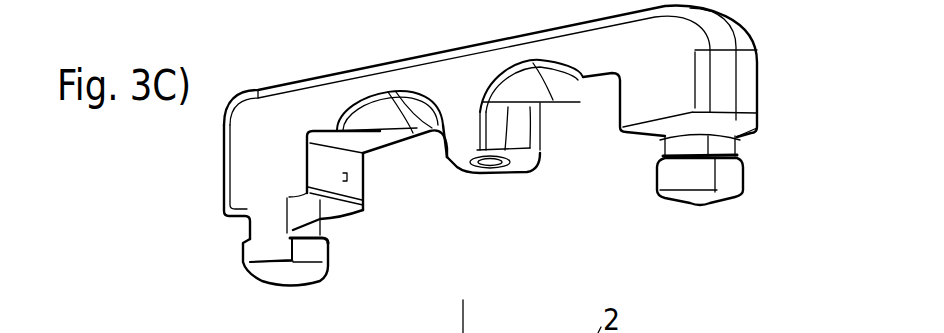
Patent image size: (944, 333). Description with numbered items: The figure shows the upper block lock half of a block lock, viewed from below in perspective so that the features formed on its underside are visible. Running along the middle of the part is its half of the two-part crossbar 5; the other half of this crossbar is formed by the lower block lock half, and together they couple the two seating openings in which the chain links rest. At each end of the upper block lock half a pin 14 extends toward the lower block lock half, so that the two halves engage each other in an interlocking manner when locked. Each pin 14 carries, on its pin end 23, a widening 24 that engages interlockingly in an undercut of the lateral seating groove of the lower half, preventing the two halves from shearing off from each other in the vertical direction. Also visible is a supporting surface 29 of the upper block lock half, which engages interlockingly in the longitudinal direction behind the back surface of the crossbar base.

The crossbar 5 is at (520, 165).
The pin 14 is at (258, 255).
The pin end 23 is at (291, 270).
The widening 24 is at (317, 253).
The supporting surface 29 is at (367, 176).